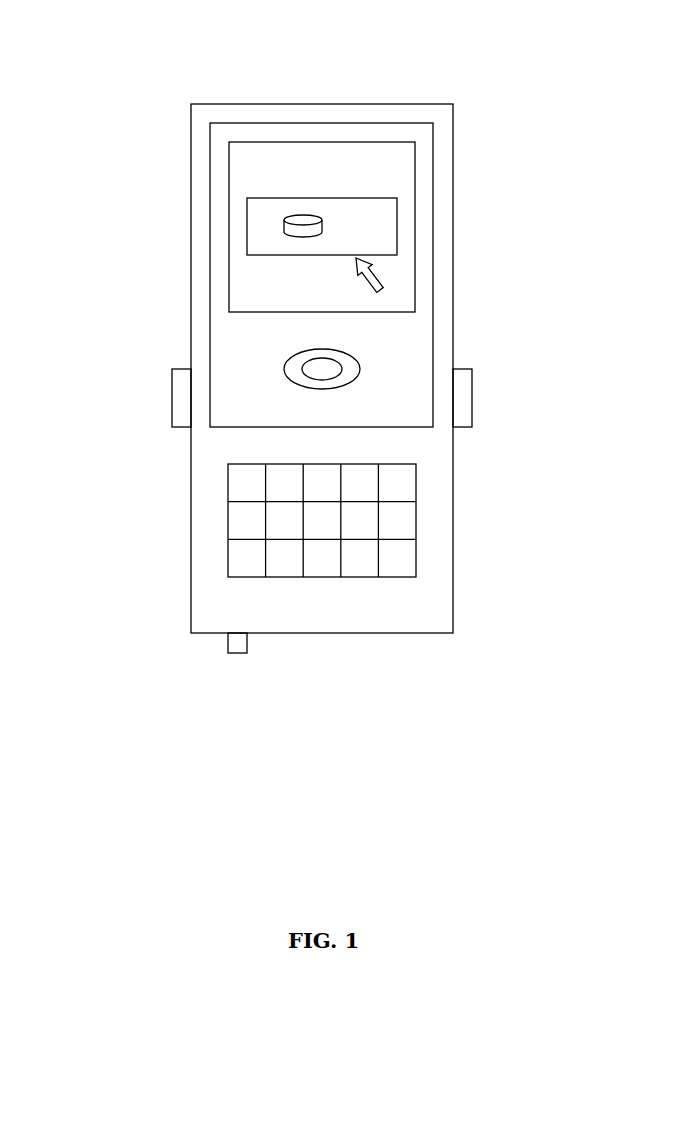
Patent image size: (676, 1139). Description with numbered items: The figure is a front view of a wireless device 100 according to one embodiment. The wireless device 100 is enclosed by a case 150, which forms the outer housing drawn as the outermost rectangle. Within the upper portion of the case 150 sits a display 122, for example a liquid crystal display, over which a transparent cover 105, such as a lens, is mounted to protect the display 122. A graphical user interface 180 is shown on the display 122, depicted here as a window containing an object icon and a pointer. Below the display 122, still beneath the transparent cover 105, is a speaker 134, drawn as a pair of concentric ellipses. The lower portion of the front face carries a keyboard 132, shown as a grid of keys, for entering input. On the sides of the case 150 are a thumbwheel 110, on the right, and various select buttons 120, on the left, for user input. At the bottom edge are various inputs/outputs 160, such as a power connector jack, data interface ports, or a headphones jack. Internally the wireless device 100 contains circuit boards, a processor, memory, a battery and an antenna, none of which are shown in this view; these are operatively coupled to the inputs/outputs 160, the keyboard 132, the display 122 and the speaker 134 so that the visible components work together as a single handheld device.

The wireless device 100 is at (285, 85).
The transparent cover 105 is at (229, 332).
The thumbwheel 110 is at (472, 407).
The select buttons 120 is at (172, 407).
The display 122 is at (267, 180).
The keyboard 132 is at (248, 520).
The speaker 134 is at (359, 350).
The case 150 is at (449, 131).
The inputs/outputs 160 is at (230, 672).
The graphical user interface 180 is at (380, 215).